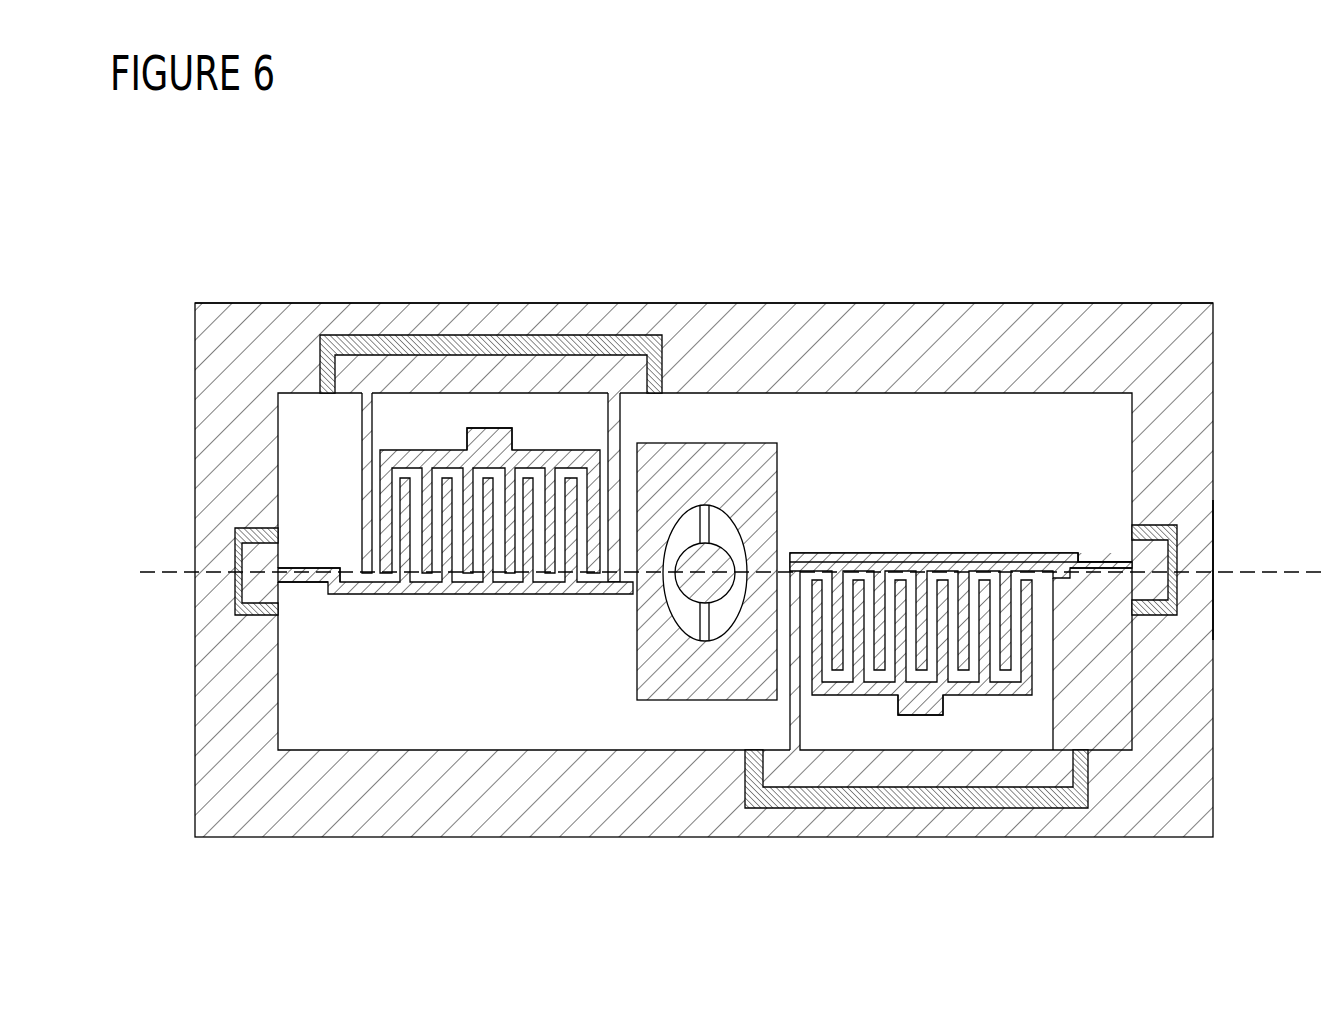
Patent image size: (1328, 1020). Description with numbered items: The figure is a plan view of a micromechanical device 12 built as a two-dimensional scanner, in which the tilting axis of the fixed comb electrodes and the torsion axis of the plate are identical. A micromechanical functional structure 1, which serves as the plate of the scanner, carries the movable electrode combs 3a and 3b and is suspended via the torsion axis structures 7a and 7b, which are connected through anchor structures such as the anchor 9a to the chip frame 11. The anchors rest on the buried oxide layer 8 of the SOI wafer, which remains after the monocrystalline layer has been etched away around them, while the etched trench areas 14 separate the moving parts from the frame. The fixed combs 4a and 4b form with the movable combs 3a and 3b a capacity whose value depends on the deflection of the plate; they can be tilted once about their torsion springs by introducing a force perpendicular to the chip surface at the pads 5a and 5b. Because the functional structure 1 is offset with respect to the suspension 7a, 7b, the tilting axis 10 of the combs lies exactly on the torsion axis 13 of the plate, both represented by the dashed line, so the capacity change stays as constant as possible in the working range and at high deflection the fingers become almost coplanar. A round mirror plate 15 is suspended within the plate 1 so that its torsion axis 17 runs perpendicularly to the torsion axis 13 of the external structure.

The micromechanical functional structure 1 is at (752, 495).
The movable comb electrode 3a is at (528, 590).
The movable comb electrode 3b is at (975, 550).
The fixed comb electrode 4a is at (430, 585).
The fixed comb electrode 4b is at (985, 665).
The pad 5a is at (500, 440).
The pad 5b is at (920, 705).
The torsion axis structure 7a is at (315, 585).
The torsion axis structure 7b is at (1090, 565).
The buried oxide layer 8 is at (425, 345).
The anchor 9a is at (275, 558).
The tilting axis 10 is at (1275, 560).
The chip frame 11 is at (1200, 372).
The micromechanical device 12 is at (985, 215).
The torsion axis 13 is at (1275, 560).
The trench areas 14 is at (870, 410).
The round mirror plate 15 is at (690, 595).
The torsion axis of the round mirror plate 17 is at (705, 510).